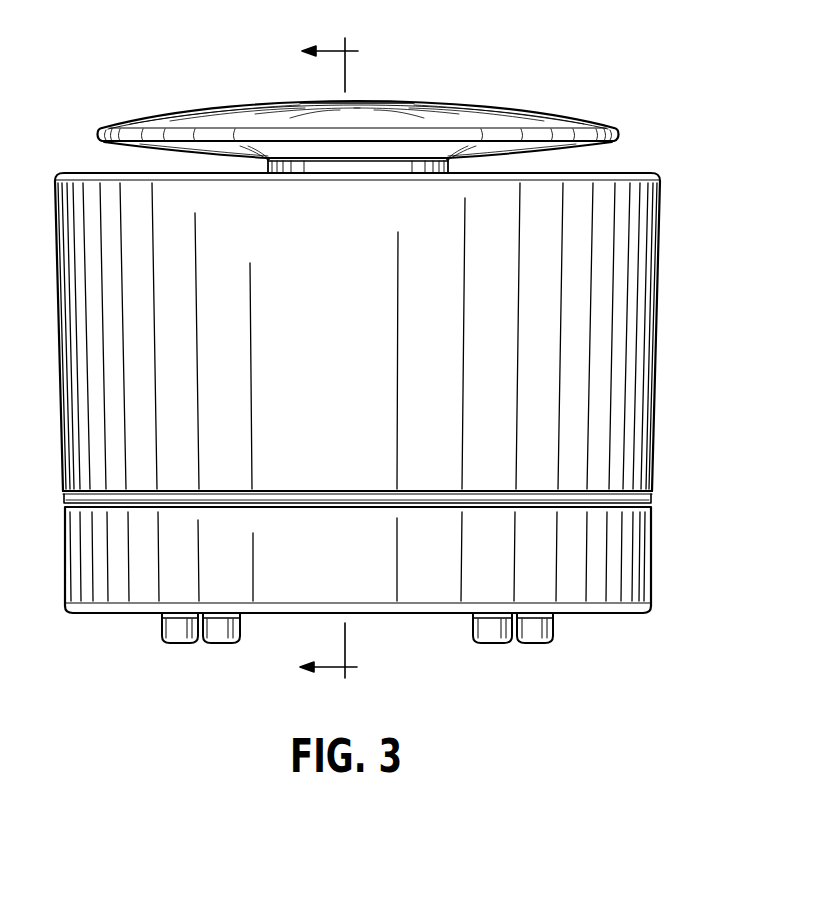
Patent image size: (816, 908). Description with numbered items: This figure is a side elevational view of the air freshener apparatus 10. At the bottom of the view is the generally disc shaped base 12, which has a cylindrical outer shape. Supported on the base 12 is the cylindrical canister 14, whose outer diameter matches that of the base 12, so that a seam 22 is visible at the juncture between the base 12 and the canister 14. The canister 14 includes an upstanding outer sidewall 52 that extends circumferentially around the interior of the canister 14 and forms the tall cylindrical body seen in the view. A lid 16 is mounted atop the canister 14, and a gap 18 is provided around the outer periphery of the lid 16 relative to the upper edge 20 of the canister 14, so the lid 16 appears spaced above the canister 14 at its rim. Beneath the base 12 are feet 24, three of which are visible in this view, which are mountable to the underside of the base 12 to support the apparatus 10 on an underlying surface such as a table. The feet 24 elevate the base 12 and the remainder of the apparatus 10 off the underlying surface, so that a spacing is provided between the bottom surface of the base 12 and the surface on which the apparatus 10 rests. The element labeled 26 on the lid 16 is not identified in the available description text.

The air freshener apparatus 10 is at (386, 360).
The base 12 is at (391, 603).
The canister 14 is at (386, 316).
The lid 16 is at (438, 101).
The gap 18 is at (383, 111).
The upper edge 20 is at (653, 173).
The seam 22 is at (653, 498).
The feet 24 is at (134, 645).
The lid top surface 26 is at (504, 109).
The outer sidewall 52 is at (328, 363).